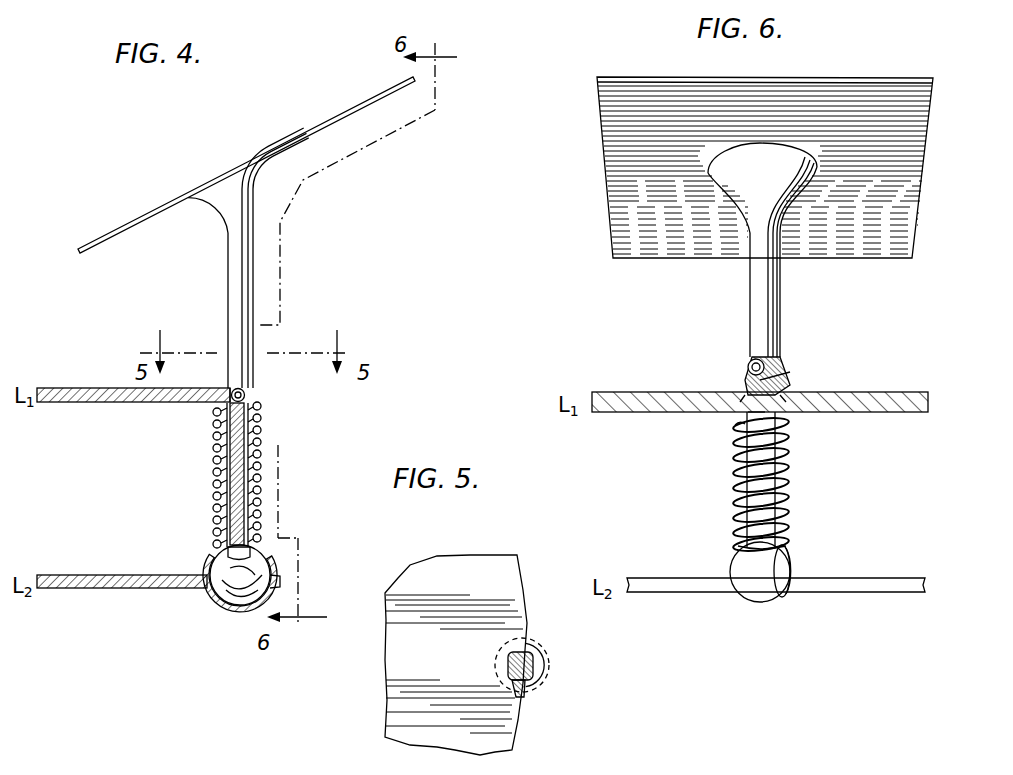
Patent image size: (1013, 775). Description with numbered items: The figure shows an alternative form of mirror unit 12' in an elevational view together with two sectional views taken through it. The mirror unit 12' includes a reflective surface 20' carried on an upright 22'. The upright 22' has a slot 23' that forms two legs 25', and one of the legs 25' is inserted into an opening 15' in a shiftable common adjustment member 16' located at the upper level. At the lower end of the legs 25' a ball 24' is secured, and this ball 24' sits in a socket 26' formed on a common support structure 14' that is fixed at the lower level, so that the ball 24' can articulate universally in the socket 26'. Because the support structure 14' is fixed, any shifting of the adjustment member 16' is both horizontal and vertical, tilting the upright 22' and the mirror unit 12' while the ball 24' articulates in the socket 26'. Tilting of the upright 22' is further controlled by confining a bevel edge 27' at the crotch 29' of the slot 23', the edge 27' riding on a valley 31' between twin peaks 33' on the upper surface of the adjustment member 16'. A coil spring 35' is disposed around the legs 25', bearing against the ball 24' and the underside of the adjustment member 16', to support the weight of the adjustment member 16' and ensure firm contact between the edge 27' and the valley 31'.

In FIG. 4, the mirror unit 12' is at (346, 217).
In FIG. 6, the mirror unit 12' is at (725, 199).
In FIG. 4, the common support structure 14' is at (158, 563).
In FIG. 6, the common support structure 14' is at (776, 605).
In FIG. 4, the opening 15' is at (275, 400).
In FIG. 5, the opening 15' is at (542, 699).
In FIG. 4, the common adjustment member 16' is at (133, 373).
In FIG. 5, the common adjustment member 16' is at (456, 641).
In FIG. 6, the common adjustment member 16' is at (760, 419).
In FIG. 4, the reflective surface 20' is at (246, 165).
In FIG. 4, the upright 22' is at (238, 258).
In FIG. 5, the upright 22' is at (549, 656).
In FIG. 6, the upright 22' is at (754, 250).
In FIG. 4, the slot 23' is at (276, 475).
In FIG. 6, the slot 23' is at (761, 479).
In FIG. 4, the ball 24' is at (222, 590).
In FIG. 6, the ball 24' is at (788, 562).
In FIG. 4, the legs 25' is at (242, 472).
In FIG. 5, the legs 25' is at (564, 664).
In FIG. 6, the legs 25' is at (732, 485).
In FIG. 4, the socket 26' is at (202, 550).
In FIG. 6, the socket 26' is at (812, 571).
In FIG. 6, the bevel edge 27' is at (724, 425).
In FIG. 4, the crotch 29' is at (267, 383).
In FIG. 6, the crotch 29' is at (747, 362).
In FIG. 6, the valley 31' is at (800, 359).
In FIG. 6, the twin peaks 33' is at (771, 381).
In FIG. 4, the coil spring 35' is at (195, 478).
In FIG. 5, the coil spring 35' is at (533, 645).
In FIG. 6, the coil spring 35' is at (791, 485).